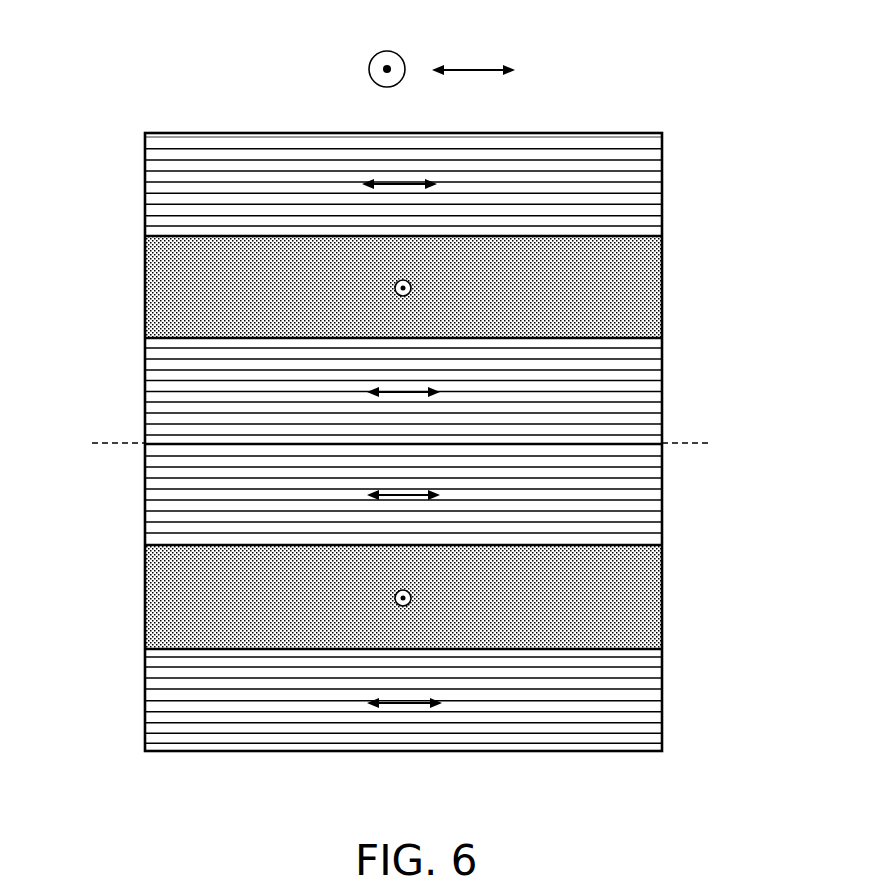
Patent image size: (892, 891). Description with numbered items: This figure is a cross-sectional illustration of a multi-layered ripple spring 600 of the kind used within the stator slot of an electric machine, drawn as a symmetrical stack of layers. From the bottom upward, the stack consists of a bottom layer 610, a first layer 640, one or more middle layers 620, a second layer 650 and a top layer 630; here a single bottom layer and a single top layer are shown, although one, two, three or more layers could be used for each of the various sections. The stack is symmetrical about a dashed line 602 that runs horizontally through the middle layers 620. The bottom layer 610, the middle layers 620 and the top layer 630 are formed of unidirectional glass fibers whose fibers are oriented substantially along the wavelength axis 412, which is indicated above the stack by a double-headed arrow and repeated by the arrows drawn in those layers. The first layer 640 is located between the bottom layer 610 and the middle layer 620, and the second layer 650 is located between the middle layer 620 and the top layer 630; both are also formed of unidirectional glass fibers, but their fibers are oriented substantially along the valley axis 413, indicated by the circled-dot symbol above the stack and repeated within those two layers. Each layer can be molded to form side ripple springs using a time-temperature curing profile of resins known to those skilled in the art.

The ripple spring 600 is at (635, 65).
The wavelength axis 412 is at (478, 70).
The valley axis 413 is at (369, 69).
The top layer 630 is at (662, 185).
The second layer 650 is at (145, 285).
The middle layers 620 is at (662, 393).
The dashed line 602 is at (103, 442).
The first layer 640 is at (145, 596).
The bottom layer 610 is at (662, 703).